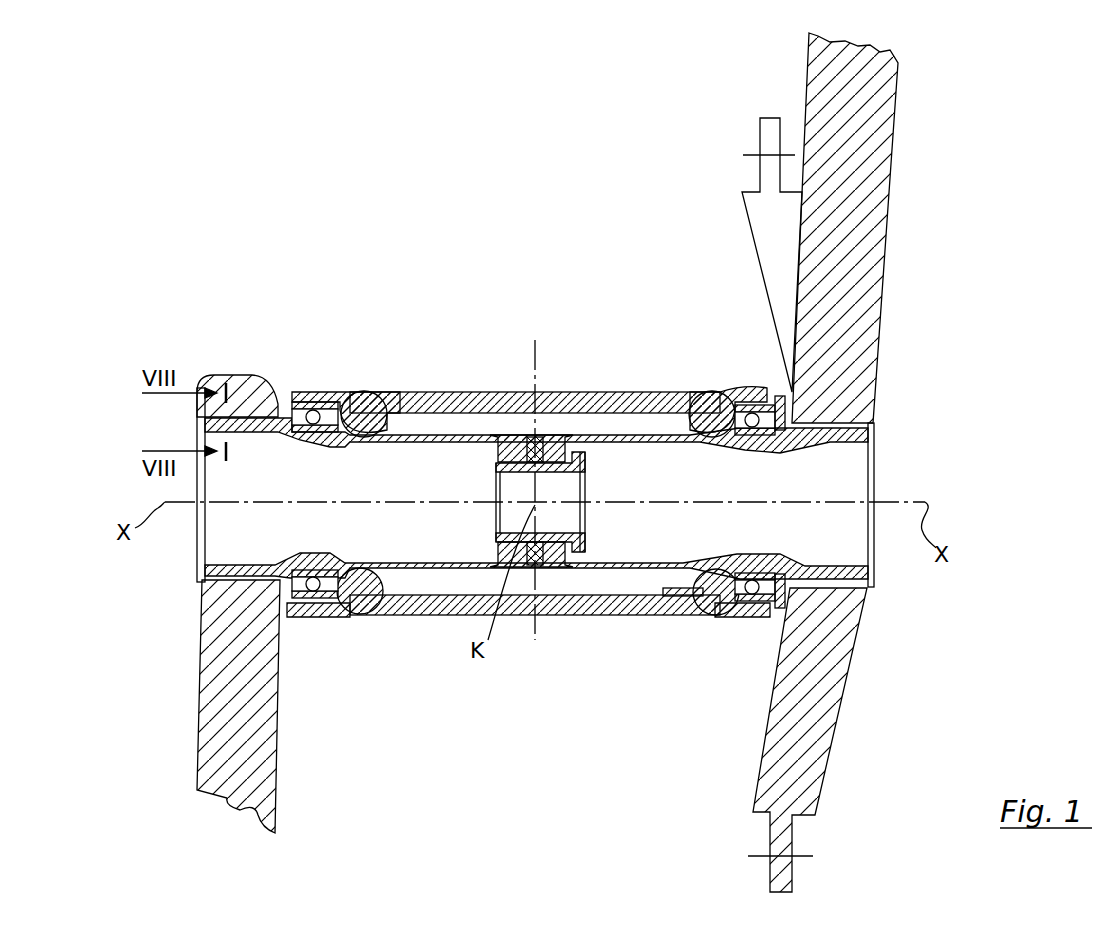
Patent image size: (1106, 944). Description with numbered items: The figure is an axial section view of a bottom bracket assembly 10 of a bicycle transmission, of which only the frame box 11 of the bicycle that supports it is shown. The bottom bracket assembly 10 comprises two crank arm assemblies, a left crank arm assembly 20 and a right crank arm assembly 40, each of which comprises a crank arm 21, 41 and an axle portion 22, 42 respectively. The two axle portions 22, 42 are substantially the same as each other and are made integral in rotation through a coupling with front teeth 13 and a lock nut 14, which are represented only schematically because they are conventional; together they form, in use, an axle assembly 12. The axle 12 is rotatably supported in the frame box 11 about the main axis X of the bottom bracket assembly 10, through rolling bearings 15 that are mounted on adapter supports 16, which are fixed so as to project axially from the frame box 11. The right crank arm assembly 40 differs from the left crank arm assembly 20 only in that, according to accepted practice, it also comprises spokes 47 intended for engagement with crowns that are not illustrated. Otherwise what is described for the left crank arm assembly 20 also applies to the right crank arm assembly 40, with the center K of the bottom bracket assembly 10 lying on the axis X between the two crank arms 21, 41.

The bottom bracket assembly 10 is at (522, 262).
The frame box 11 is at (597, 392).
The axle assembly 12 is at (878, 453).
The front teeth 13 is at (538, 566).
The lock nut 14 is at (590, 550).
The rolling bearings 15 is at (300, 605).
The adapter supports 16 is at (335, 612).
The left crank arm assembly 20 is at (152, 596).
The crank arm 21 is at (215, 738).
The axle portion 22 is at (447, 569).
The right crank arm assembly 40 is at (874, 462).
The crank arm 41 is at (878, 175).
The axle portion 42 is at (652, 598).
The spokes 47 is at (770, 228).